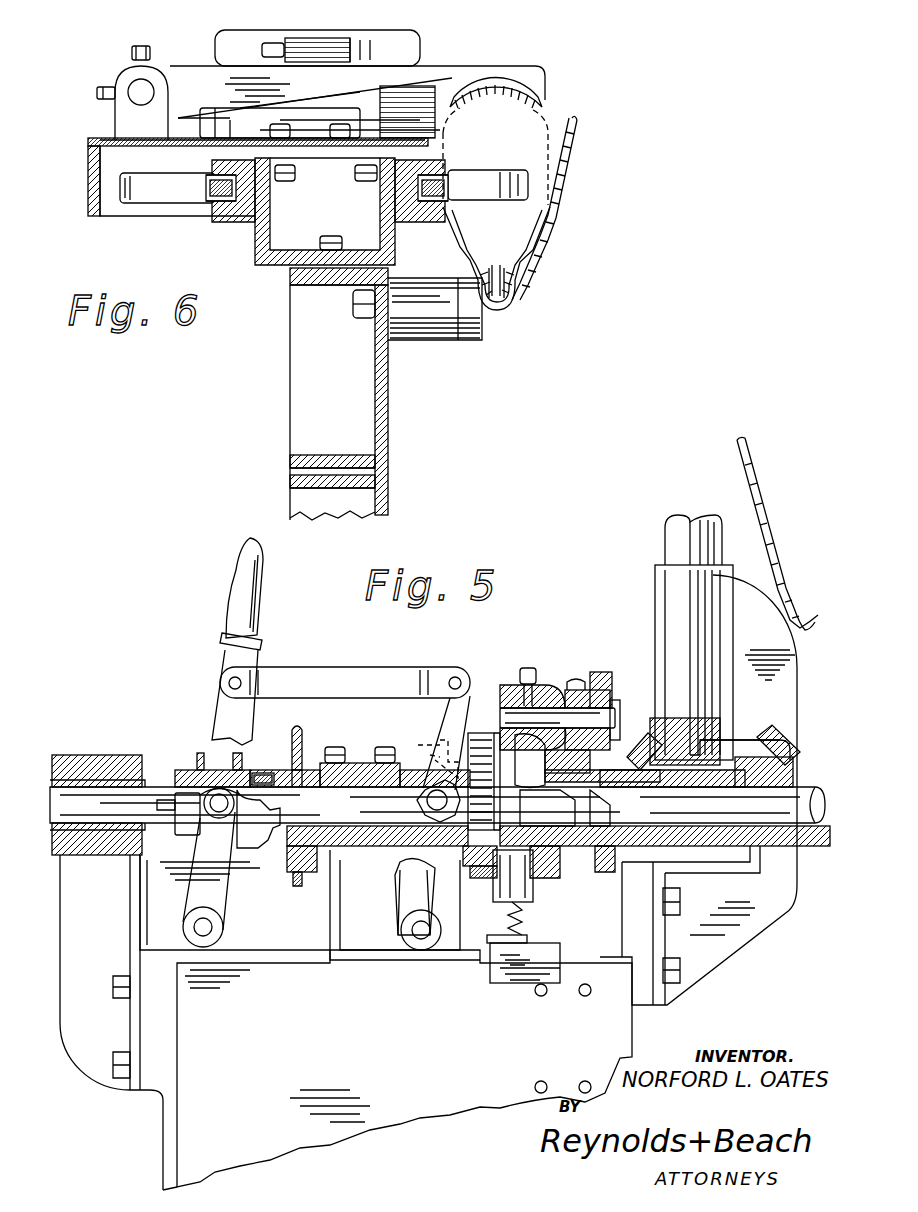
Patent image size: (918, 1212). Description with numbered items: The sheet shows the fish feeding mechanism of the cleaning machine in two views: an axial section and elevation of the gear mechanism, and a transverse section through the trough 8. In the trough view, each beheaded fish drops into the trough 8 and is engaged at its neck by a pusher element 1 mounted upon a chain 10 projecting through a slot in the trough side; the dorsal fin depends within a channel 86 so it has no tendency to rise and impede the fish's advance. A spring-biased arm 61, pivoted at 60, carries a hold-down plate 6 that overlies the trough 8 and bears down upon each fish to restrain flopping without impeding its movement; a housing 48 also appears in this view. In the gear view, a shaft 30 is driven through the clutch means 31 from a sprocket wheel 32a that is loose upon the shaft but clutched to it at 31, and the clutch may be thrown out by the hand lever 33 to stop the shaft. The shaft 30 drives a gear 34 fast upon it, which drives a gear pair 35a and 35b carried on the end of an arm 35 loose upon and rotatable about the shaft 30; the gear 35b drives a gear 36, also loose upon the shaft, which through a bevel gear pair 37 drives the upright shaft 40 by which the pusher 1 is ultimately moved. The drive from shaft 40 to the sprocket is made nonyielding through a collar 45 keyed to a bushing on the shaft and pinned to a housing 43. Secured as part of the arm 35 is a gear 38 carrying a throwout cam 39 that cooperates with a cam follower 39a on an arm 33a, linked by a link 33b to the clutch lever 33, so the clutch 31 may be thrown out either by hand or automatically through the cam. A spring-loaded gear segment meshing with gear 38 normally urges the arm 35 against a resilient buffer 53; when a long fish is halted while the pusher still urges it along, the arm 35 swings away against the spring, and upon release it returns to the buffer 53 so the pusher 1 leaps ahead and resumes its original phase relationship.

In FIG. 6, the pusher element 1 is at (160, 200).
In FIG. 6, the hold-down plate 6 is at (526, 101).
In FIG. 6, the trough 8 is at (572, 127).
In FIG. 5, the trough 8 is at (760, 480).
In FIG. 6, the chain 10 is at (222, 198).
In FIG. 5, the shaft 30 is at (150, 792).
In FIG. 5, the clutch means 31 is at (250, 770).
In FIG. 5, the sprocket wheel 32a is at (297, 868).
In FIG. 5, the hand lever 33 is at (255, 586).
In FIG. 5, the arm 33a is at (438, 722).
In FIG. 5, the link 33b is at (357, 678).
In FIG. 5, the gear 34 is at (588, 852).
In FIG. 5, the arm 35 is at (505, 686).
In FIG. 5, the gear 35a is at (576, 680).
In FIG. 5, the gear 35b is at (605, 672).
In FIG. 5, the gear 36 is at (608, 840).
In FIG. 5, the bevel gear pair 37 is at (633, 740).
In FIG. 5, the gear 38 is at (484, 735).
In FIG. 5, the throwout cam 39 is at (440, 750).
In FIG. 5, the cam follower 39a is at (395, 855).
In FIG. 5, the upright shaft 40 is at (675, 545).
In FIG. 6, the housing 43 is at (340, 138).
In FIG. 6, the collar 45 is at (362, 104).
In FIG. 6, the top housing 48 is at (305, 50).
In FIG. 5, the resilient buffer 53 is at (512, 880).
In FIG. 6, the pivot 60 is at (135, 83).
In FIG. 6, the spring-biased arm 61 is at (232, 72).
In FIG. 6, the channel 86 is at (506, 283).
In FIG. 5, the channel 86 is at (803, 630).